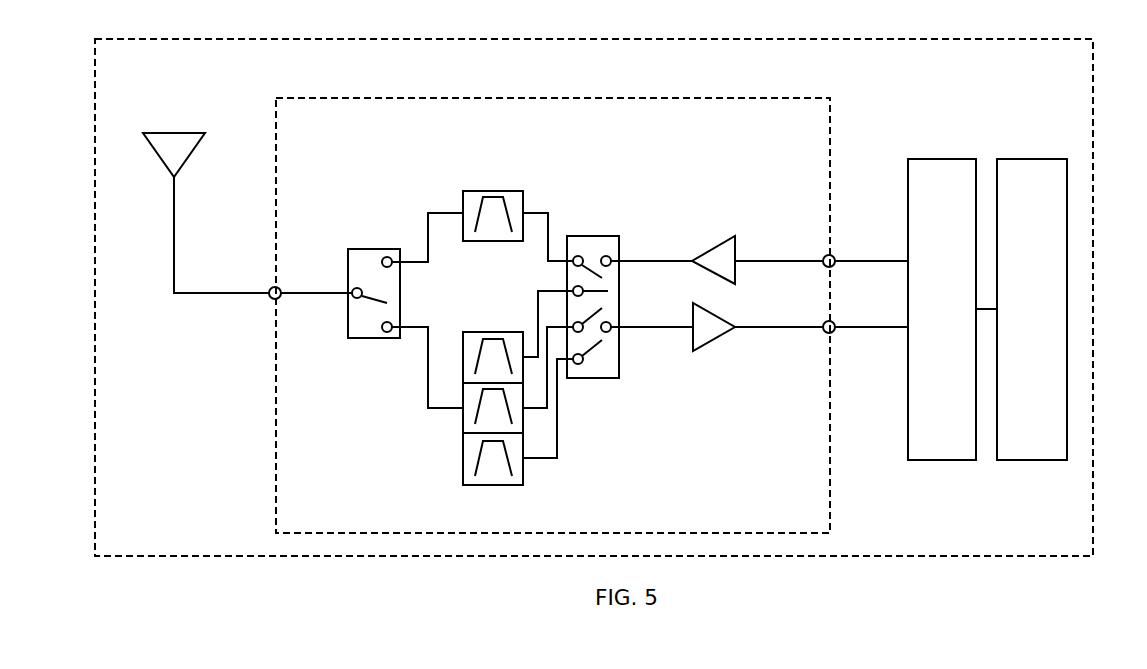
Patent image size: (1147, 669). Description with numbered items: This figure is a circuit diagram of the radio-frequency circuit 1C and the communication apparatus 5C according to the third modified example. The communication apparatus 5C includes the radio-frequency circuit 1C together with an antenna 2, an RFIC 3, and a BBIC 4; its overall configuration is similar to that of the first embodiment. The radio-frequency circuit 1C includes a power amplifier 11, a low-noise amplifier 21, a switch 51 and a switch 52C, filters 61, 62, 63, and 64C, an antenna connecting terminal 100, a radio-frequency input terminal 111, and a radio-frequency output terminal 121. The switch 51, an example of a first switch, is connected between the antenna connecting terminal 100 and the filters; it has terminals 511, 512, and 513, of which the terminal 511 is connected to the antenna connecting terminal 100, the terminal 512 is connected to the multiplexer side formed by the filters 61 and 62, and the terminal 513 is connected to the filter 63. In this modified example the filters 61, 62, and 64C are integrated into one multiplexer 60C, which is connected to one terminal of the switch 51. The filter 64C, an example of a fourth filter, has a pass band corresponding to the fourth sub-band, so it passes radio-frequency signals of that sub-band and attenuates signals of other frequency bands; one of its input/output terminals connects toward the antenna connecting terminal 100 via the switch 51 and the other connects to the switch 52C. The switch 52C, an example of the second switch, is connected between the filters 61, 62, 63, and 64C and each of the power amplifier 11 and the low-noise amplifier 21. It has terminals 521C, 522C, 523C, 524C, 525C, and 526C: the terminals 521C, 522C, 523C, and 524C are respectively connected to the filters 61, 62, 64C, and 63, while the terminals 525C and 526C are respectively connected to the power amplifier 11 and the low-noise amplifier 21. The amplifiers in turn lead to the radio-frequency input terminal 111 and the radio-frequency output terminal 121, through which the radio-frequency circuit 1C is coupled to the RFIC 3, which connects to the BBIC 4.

The communication apparatus 5C is at (1053, 39).
The radio-frequency circuit 1C is at (795, 98).
The antenna 2 is at (171, 132).
The antenna connecting terminal 100 is at (280, 288).
The switch 51 is at (372, 293).
The terminal 511 is at (352, 298).
The terminal 512 is at (384, 332).
The terminal 513 is at (391, 267).
The filter 63 is at (487, 191).
The multiplexer 60C is at (451, 409).
The filter 64C is at (486, 332).
The filter 62 is at (463, 423).
The filter 61 is at (495, 485).
The switch 52C is at (586, 315).
The terminal 521C is at (573, 383).
The terminal 522C is at (583, 322).
The terminal 523C is at (572, 289).
The terminal 524C is at (578, 255).
The terminal 525C is at (610, 257).
The terminal 526C is at (610, 332).
The power amplifier 11 is at (714, 249).
The low-noise amplifier 21 is at (713, 318).
The radio-frequency input terminal 111 is at (823, 256).
The radio-frequency output terminal 121 is at (823, 323).
The RFIC 3 is at (943, 159).
The BBIC 4 is at (1028, 159).